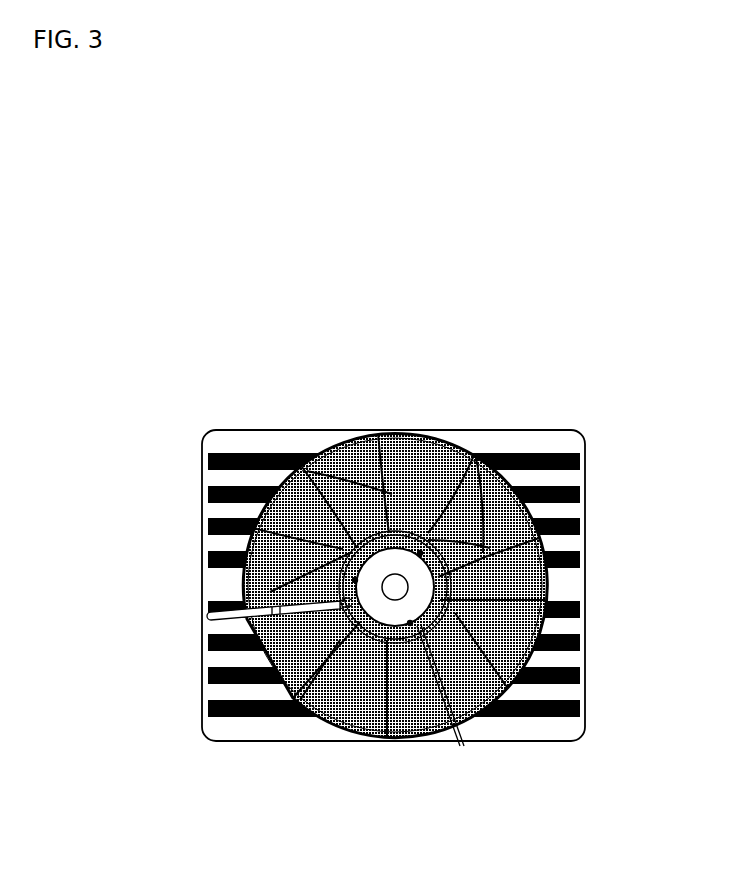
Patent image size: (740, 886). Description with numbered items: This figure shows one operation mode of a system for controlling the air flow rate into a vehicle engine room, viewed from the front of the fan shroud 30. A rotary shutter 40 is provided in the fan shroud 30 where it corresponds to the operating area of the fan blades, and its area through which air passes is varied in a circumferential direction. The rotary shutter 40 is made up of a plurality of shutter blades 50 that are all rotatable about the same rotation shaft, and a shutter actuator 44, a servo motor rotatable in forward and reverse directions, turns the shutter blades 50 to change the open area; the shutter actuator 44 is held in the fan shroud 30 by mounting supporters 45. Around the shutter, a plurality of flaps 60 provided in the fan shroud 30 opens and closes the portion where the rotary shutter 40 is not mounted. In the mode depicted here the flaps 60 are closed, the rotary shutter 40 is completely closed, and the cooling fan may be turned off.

The fan shroud 30 is at (578, 750).
The rotary shutter 40 is at (470, 736).
The shutter actuator 44 is at (378, 695).
The mounting supporters 45 is at (302, 720).
The shutter blades 50 is at (327, 723).
The flaps 60 is at (585, 518).